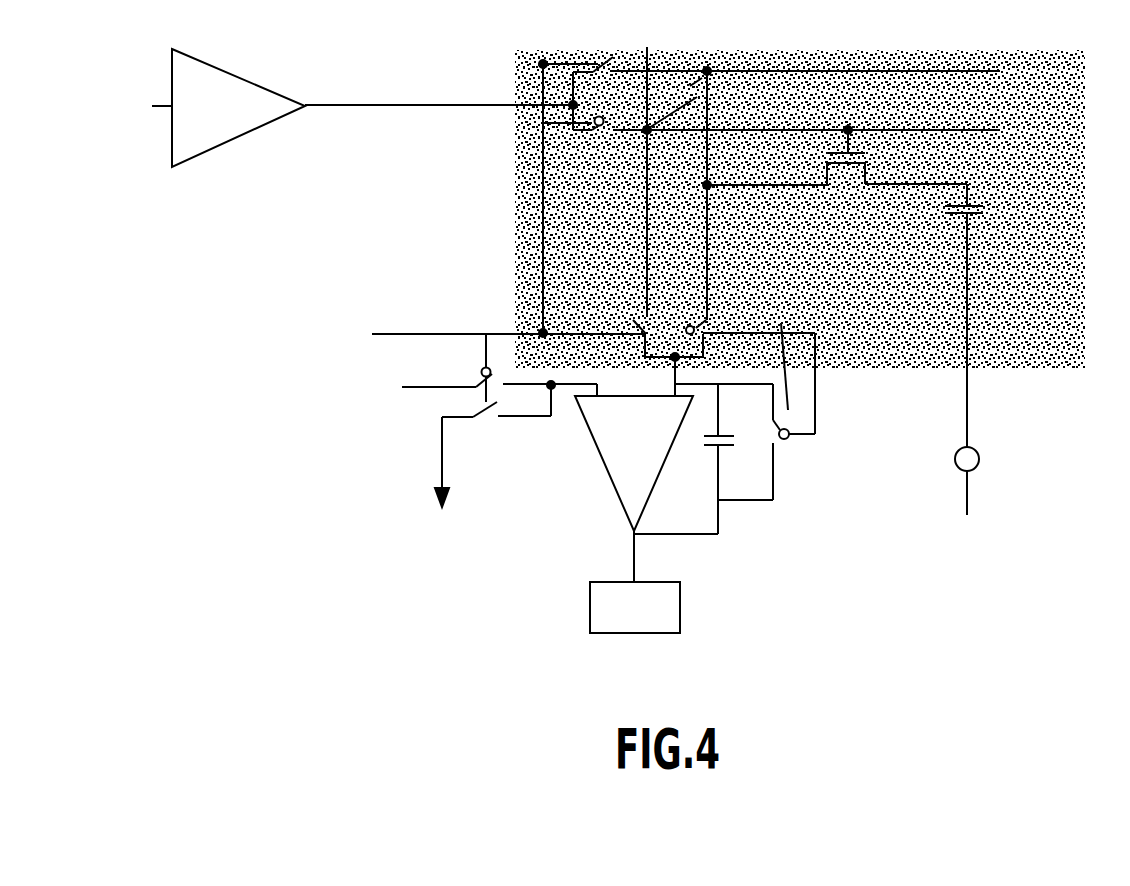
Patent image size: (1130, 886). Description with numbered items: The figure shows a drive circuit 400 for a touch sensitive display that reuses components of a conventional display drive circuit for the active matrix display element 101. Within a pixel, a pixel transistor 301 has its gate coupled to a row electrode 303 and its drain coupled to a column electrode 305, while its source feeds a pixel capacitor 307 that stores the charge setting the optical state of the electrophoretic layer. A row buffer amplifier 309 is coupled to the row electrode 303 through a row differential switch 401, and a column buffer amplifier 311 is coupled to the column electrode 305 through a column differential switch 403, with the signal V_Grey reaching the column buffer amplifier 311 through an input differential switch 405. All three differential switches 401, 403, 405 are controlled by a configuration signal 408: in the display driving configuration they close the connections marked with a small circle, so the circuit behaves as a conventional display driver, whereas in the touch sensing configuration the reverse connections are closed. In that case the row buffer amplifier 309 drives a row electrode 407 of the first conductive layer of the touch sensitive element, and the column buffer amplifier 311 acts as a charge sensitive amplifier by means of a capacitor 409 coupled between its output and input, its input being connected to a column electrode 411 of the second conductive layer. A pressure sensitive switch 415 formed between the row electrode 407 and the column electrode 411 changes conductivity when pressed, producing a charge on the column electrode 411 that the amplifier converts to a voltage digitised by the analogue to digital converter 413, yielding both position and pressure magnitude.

The active matrix display element 101 is at (1018, 350).
The pixel transistor 301 is at (852, 182).
The row electrode 303 is at (967, 123).
The column electrode 305 is at (710, 225).
The pixel capacitor 307 is at (980, 215).
The row buffer amplifier 309 is at (255, 126).
The column buffer amplifier 311 is at (602, 477).
The drive circuit 400 is at (268, 398).
The row differential switch 401 is at (600, 133).
The column differential switch 403 is at (717, 338).
The input differential switch 405 is at (488, 418).
The row electrode of the first conductive layer 407 is at (903, 67).
The configuration signal 408 is at (513, 328).
The capacitor 409 is at (733, 450).
The column electrode of the second conductive layer 411 is at (645, 237).
The analogue to digital converter 413 is at (590, 608).
The switch 415 is at (703, 88).